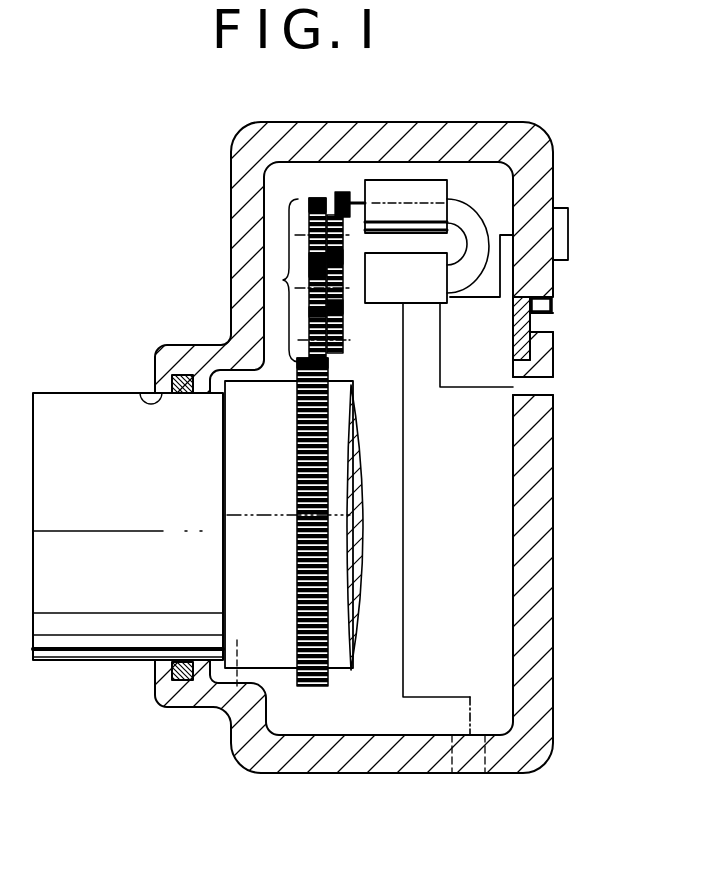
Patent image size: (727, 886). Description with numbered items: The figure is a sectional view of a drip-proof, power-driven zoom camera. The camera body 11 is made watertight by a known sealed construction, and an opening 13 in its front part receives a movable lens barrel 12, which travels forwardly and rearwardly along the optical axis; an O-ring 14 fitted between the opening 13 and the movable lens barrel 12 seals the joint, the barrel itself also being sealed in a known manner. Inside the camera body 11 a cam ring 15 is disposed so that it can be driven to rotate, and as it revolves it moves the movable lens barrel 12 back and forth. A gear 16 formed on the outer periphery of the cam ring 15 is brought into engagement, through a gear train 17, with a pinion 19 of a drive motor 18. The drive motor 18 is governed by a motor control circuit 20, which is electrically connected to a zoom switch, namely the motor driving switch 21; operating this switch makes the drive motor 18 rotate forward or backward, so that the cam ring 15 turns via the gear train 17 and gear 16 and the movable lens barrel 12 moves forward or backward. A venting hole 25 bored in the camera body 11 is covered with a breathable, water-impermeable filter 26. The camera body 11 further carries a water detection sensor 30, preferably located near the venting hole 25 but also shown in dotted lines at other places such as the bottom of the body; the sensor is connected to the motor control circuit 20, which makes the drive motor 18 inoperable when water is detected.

The camera body 11 is at (368, 760).
The movable lens barrel 12 is at (93, 661).
The opening 13 is at (147, 392).
The O-ring 14 is at (183, 394).
The cam ring 15 is at (233, 717).
The gear 16 is at (318, 487).
The gear train 17 is at (304, 280).
The drive motor 18 is at (425, 188).
The pinion 19 is at (341, 192).
The motor control circuit 20 is at (389, 305).
The motor driving switch 21 is at (564, 219).
The venting hole 25 is at (540, 323).
The filter 26 is at (532, 345).
The water detection sensor 30 is at (540, 386).